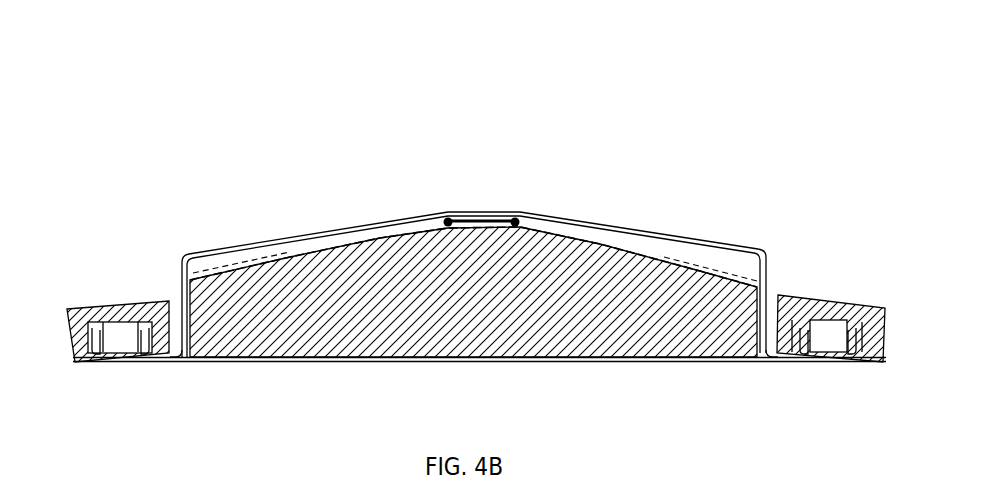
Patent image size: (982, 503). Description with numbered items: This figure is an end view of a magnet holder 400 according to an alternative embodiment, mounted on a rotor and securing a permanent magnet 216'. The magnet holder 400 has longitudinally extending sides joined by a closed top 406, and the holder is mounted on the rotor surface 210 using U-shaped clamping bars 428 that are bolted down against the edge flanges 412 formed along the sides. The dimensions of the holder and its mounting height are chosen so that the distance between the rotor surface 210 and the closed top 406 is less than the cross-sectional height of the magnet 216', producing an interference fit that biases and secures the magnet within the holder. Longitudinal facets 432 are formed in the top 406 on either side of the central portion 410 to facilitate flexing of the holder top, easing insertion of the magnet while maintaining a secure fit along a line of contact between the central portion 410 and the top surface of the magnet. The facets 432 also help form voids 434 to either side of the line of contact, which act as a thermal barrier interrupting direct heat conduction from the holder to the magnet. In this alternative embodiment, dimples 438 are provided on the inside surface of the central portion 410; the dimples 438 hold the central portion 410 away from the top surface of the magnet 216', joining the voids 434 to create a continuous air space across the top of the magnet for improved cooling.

The magnet holder 400 is at (458, 122).
The closed top 406 is at (595, 204).
The central portion 410 is at (425, 218).
The longitudinal facets 432 is at (287, 236).
The voids 434 is at (222, 270).
The dimples 438 is at (515, 220).
The U-shaped clamping bars 428 is at (115, 300).
The edge flanges 412 is at (83, 368).
The rotor surface 210 is at (290, 362).
The permanent magnet 216' is at (473, 323).